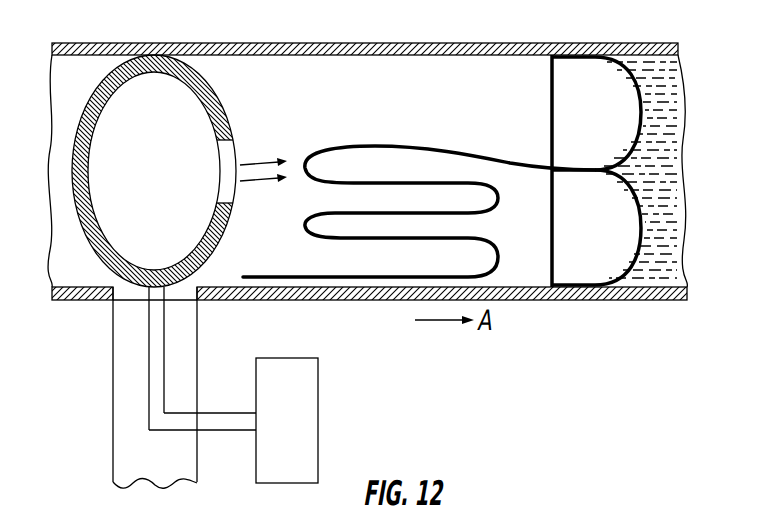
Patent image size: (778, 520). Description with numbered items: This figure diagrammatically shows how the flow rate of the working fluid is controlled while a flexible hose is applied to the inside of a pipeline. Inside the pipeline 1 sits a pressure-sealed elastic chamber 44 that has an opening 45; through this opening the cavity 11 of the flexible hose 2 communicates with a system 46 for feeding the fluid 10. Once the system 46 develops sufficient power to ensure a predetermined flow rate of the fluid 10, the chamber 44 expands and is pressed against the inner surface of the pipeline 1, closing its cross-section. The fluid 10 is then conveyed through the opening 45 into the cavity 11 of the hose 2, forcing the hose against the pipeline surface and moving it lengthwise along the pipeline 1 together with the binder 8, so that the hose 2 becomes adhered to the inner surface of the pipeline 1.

The pipeline 1 is at (476, 55).
The flexible hose 2 is at (502, 157).
The binder 8 is at (657, 63).
The fluid 10 is at (378, 83).
The cavity 11 is at (595, 75).
The pressure-sealed elastic chamber 44 is at (190, 70).
The opening 45 is at (230, 157).
The system for feeding the fluid 46 is at (305, 403).